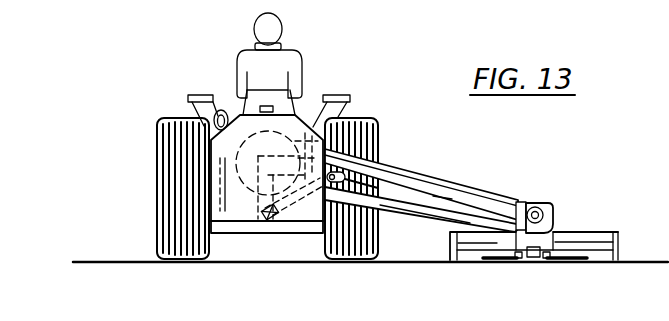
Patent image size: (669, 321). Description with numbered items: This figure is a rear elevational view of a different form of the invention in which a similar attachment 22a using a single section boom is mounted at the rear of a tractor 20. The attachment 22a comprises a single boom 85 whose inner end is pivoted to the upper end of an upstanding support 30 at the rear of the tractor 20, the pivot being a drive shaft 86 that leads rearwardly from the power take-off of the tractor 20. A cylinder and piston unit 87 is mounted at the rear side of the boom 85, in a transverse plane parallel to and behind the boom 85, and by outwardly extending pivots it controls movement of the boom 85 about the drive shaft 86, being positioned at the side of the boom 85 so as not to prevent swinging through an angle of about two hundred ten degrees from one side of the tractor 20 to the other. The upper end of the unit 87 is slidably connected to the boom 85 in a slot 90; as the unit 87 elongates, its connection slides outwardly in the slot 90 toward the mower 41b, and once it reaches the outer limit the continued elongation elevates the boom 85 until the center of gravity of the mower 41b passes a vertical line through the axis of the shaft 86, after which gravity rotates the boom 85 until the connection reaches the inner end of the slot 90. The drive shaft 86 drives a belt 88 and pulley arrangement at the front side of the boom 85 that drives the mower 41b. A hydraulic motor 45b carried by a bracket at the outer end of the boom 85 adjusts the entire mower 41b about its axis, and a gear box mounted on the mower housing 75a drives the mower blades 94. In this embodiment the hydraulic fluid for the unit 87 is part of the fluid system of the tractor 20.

The tractor 20 is at (156, 177).
The drive shaft 86 is at (268, 163).
The upstanding support 30 is at (257, 200).
The cylinder and piston unit 87 is at (283, 210).
The boom 85 is at (473, 203).
The belt 88 is at (395, 163).
The attachment 22a is at (413, 176).
The slot 90 is at (382, 204).
The hydraulic motor 45b is at (537, 205).
The mower 41b is at (589, 228).
The mower housing 75a is at (597, 242).
The mower blades 94 is at (578, 259).